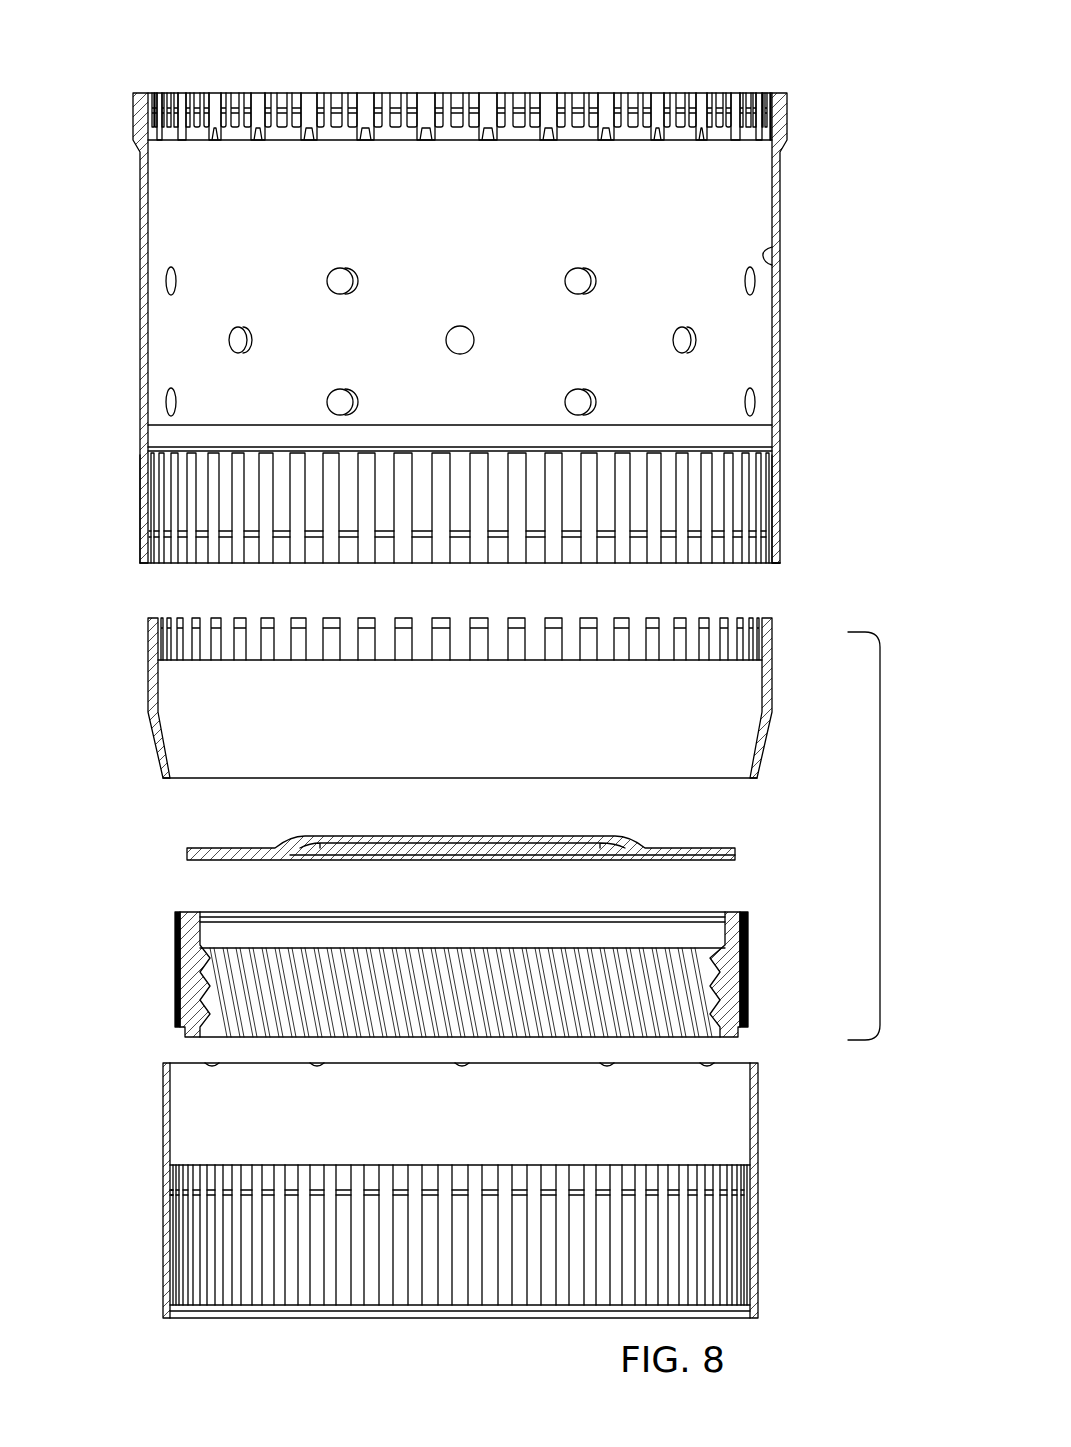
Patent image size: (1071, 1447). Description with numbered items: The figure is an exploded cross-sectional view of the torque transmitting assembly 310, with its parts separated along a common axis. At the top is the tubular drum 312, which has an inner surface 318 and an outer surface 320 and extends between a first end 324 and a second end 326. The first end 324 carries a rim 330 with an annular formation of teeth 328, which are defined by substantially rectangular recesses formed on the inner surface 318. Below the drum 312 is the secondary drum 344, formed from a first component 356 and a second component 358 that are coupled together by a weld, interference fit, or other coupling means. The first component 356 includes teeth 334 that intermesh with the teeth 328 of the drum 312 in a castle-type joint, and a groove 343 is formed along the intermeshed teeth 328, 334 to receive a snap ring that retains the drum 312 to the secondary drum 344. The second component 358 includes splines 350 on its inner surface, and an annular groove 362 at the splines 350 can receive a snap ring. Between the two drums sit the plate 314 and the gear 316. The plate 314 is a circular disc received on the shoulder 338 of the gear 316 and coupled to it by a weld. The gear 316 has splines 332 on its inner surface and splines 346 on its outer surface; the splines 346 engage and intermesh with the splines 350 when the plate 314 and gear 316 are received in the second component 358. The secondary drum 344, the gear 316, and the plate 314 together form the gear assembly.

The torque transmitting assembly 310 is at (116, 62).
The drum 312 is at (793, 225).
The plate 314 is at (735, 852).
The gear 316 is at (752, 967).
The inner surface 318 is at (775, 262).
The outer surface 320 is at (782, 298).
The first end 324 is at (778, 563).
The second end 326 is at (775, 100).
The teeth 328 is at (215, 563).
The rim 330 is at (145, 565).
The splines 332 is at (682, 988).
The teeth 334 is at (745, 618).
The shoulder 338 is at (738, 912).
The groove 343 is at (255, 525).
The secondary drum 344 is at (882, 840).
The splines 346 is at (175, 968).
The splines 350 is at (650, 1228).
The first component 356 is at (775, 695).
The second component 358 is at (762, 1125).
The annular groove 362 is at (295, 1193).